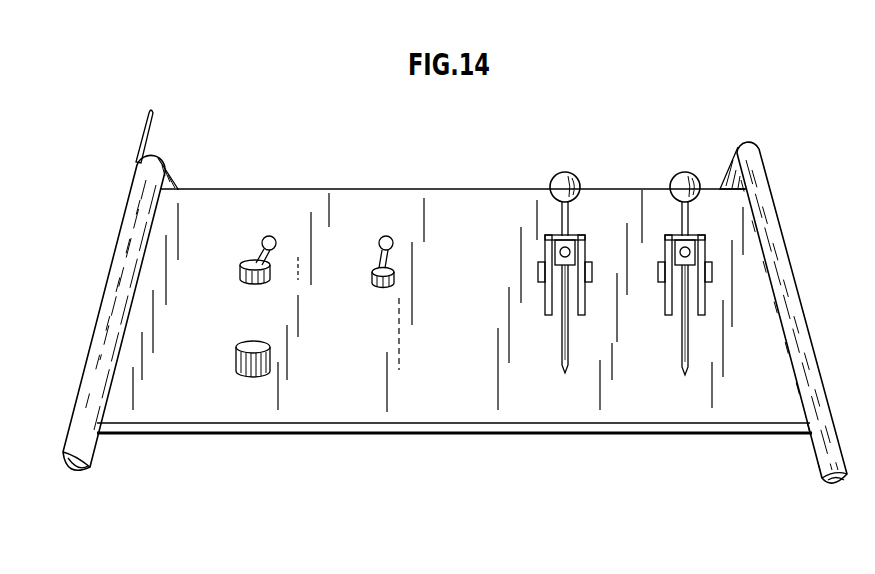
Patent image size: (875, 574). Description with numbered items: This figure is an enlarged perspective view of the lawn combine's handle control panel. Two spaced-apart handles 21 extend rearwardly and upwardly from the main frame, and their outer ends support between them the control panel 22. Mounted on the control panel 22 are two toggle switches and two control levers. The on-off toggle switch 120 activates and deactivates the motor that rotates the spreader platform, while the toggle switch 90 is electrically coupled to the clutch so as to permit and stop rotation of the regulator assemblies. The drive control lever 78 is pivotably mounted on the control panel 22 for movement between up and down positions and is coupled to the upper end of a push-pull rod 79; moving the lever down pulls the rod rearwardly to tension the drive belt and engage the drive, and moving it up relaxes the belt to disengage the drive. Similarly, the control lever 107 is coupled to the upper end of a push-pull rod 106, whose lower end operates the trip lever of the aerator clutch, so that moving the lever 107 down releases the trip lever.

The handles 21 is at (142, 208).
The control panel 22 is at (443, 213).
The toggle switch 90 is at (268, 236).
The on-off toggle switch 120 is at (386, 235).
The drive control lever 78 is at (551, 173).
The push-pull rod 79 is at (563, 356).
The control lever 107 is at (672, 175).
The push-pull rod 106 is at (683, 357).